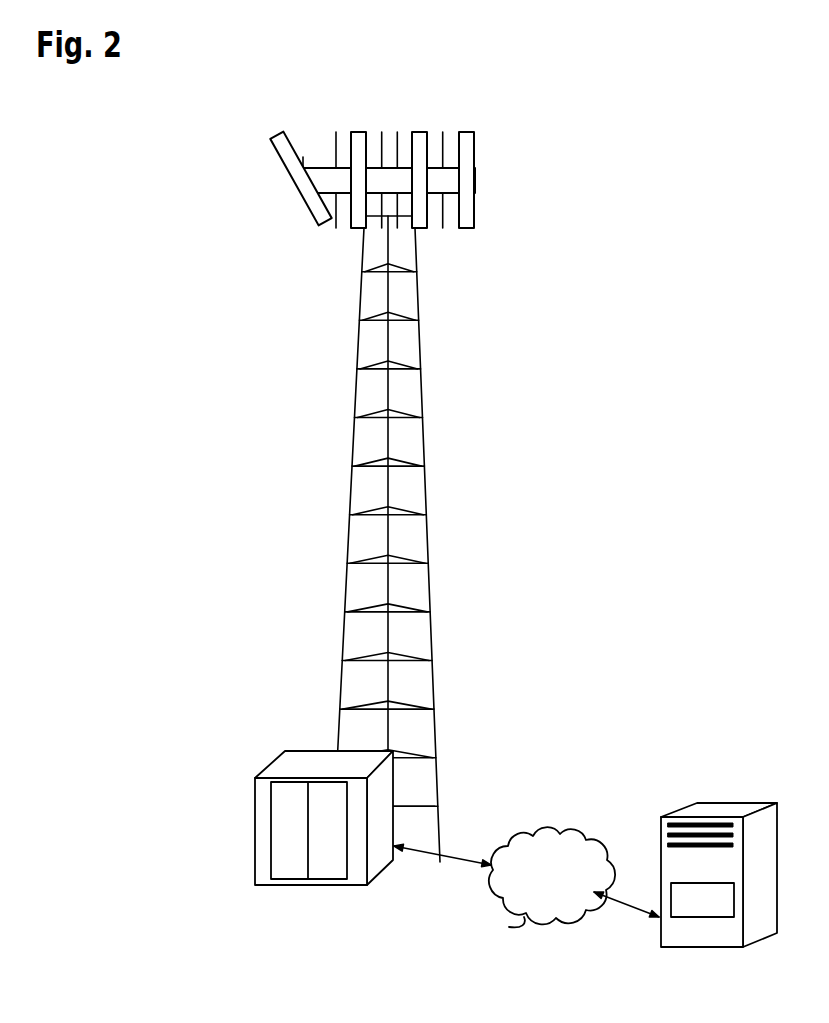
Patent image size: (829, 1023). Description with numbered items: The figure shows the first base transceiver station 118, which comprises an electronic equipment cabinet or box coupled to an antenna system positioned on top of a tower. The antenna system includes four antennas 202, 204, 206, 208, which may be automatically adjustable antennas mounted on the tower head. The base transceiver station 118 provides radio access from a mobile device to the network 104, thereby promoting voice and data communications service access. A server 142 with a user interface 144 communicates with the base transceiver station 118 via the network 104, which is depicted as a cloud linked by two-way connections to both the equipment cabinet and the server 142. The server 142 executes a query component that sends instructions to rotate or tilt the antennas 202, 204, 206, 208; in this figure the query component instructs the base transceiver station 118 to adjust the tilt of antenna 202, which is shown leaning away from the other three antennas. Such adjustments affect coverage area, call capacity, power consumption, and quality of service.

The network 104 is at (549, 892).
The first base transceiver station 118 is at (290, 885).
The server 142 is at (702, 897).
The user interface 144 is at (702, 900).
The antenna 202 is at (285, 173).
The antenna 204 is at (357, 230).
The antenna 206 is at (421, 231).
The antenna 208 is at (475, 230).